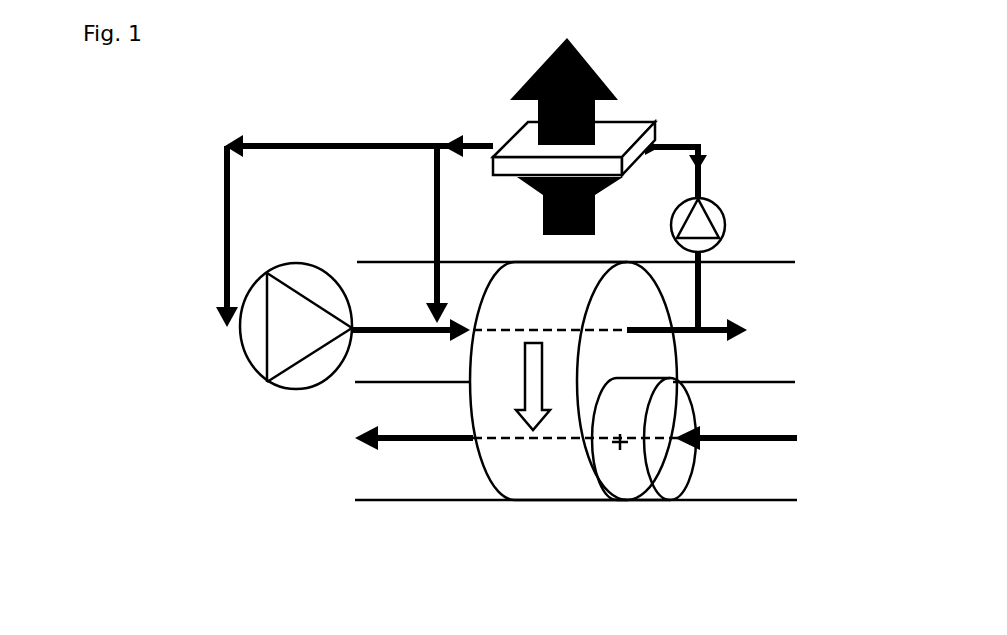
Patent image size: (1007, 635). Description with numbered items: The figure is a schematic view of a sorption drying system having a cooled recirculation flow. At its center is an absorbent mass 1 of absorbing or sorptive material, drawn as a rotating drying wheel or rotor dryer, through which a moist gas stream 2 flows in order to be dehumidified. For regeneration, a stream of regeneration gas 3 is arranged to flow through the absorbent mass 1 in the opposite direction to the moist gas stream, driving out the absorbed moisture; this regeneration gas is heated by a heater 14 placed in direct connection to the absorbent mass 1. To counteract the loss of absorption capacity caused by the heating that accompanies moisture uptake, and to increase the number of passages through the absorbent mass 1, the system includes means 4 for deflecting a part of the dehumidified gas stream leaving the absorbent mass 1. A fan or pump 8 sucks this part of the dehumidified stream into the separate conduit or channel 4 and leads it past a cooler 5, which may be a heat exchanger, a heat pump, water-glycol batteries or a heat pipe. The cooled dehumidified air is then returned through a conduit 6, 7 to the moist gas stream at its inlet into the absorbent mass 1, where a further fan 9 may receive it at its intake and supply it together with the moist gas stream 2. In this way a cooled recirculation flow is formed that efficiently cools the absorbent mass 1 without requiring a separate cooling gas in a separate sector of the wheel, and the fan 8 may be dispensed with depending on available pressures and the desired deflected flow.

The absorbent mass 1 is at (582, 381).
The moist gas stream 2 is at (411, 314).
The stream of regeneration gas 3 is at (760, 433).
The means for deflecting a part of the dehumidified gas stream 4 is at (687, 296).
The cooler 5 is at (574, 136).
The conduit 6 is at (426, 229).
The conduit 7 is at (354, 231).
The fan 8 is at (706, 195).
The fan 9 is at (296, 326).
The heater 14 is at (633, 480).